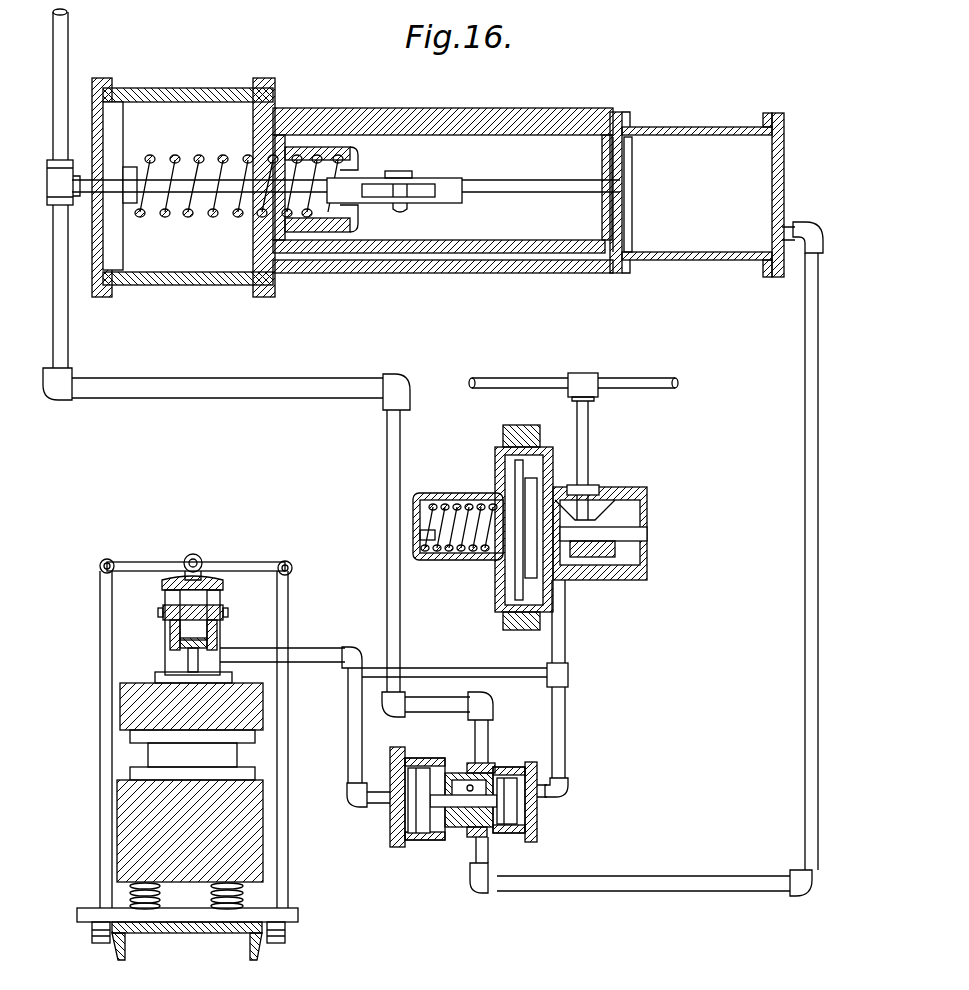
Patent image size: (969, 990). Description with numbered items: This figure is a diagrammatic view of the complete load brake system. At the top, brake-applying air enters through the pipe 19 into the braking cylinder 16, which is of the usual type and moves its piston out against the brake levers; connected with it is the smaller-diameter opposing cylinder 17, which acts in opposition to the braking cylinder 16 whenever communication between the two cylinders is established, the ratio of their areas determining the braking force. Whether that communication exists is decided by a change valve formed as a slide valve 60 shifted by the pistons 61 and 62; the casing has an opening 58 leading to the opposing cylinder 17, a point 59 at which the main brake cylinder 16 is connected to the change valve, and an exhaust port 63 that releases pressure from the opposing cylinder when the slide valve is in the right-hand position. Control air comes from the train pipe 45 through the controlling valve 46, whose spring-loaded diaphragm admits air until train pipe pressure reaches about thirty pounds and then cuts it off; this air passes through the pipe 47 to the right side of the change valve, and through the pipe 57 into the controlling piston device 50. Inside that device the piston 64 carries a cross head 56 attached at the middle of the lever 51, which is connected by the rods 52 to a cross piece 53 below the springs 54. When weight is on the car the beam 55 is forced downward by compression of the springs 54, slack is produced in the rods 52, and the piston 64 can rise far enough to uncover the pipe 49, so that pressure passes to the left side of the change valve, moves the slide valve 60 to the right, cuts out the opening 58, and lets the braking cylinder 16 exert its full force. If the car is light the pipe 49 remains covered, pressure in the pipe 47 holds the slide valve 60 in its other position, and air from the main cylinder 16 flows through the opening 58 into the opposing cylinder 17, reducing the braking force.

The braking cylinder 16 is at (178, 115).
The opposing cylinder 17 is at (675, 145).
The pipe 19 is at (62, 38).
The train pipe 45 is at (622, 386).
The controlling valve 46 is at (440, 505).
The pipe 47 is at (562, 673).
The pipe 49 is at (300, 655).
The controlling piston device 50 is at (222, 630).
The lever 51 is at (142, 563).
The rod 52 is at (100, 770).
The cross piece 53 is at (285, 918).
The springs 54 is at (211, 898).
The beam 55 is at (263, 709).
The cross head 56 is at (200, 560).
The pipe 57 is at (447, 672).
The opening 58 is at (548, 880).
The point 59 is at (400, 652).
The slide valve 60 is at (437, 838).
The piston 61 is at (509, 780).
The piston 62 is at (417, 812).
The exhaust port 63 is at (462, 832).
The piston 64 is at (165, 637).